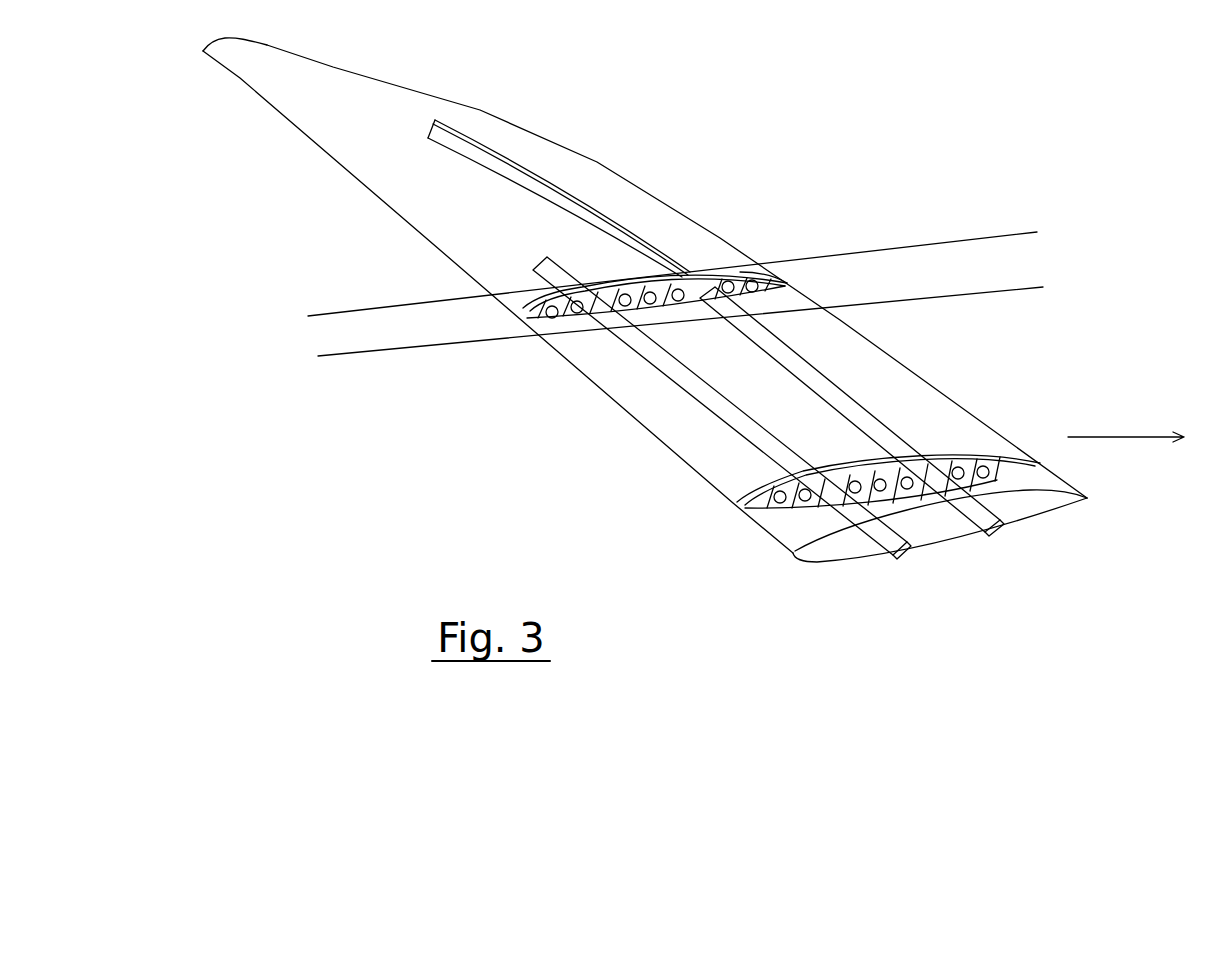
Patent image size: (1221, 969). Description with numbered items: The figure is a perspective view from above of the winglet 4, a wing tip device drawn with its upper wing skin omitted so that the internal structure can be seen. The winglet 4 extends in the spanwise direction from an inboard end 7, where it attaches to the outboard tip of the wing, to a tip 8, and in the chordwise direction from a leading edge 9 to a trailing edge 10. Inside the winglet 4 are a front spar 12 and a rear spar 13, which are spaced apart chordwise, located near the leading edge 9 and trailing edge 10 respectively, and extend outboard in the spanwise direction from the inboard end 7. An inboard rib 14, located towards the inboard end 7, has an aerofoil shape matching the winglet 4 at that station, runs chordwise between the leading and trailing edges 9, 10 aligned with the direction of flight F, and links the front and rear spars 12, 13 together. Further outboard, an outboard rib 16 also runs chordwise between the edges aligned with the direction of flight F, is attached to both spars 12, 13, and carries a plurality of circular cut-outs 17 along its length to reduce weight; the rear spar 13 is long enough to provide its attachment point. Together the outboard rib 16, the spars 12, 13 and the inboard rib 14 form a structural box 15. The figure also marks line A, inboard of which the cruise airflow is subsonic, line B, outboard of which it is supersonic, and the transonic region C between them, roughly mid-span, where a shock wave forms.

The winglet 4 is at (603, 276).
The inboard end 7 is at (935, 543).
The tip 8 is at (203, 51).
The leading edge 9 is at (597, 163).
The trailing edge 10 is at (273, 110).
The front spar 12 is at (650, 250).
The rear spar 13 is at (643, 348).
The inboard rib 14 is at (753, 502).
The structural box 15 is at (720, 368).
The outboard rib 16 is at (780, 285).
The circular cut-outs 17 is at (651, 322).
The line A is at (693, 313).
The line B is at (686, 263).
The transonic region C is at (513, 297).
The direction of flight F is at (1142, 438).